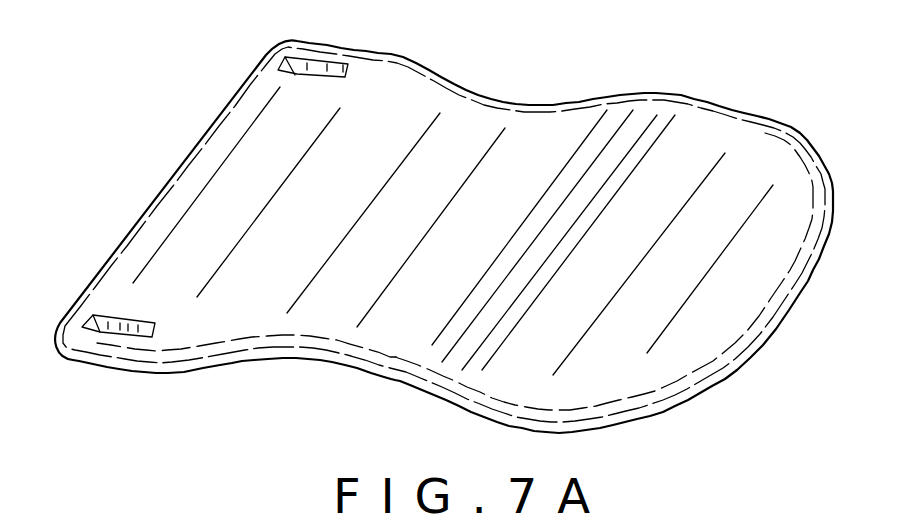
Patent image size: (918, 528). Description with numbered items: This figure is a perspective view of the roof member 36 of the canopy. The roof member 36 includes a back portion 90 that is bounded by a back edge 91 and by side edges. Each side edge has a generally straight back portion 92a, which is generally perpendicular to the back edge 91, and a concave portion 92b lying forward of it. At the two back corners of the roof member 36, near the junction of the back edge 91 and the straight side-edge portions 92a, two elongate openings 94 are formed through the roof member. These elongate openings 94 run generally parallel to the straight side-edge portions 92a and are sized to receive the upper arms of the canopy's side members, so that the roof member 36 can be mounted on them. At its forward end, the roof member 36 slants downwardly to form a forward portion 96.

The roof member 36 is at (503, 72).
The back portion 90 is at (340, 212).
The back edge 91 is at (170, 182).
The generally straight back portion of side edge 92a is at (120, 371).
The concave portion of side edge 92b is at (351, 367).
The elongate openings 94 is at (297, 72).
The forward portion 96 is at (715, 250).